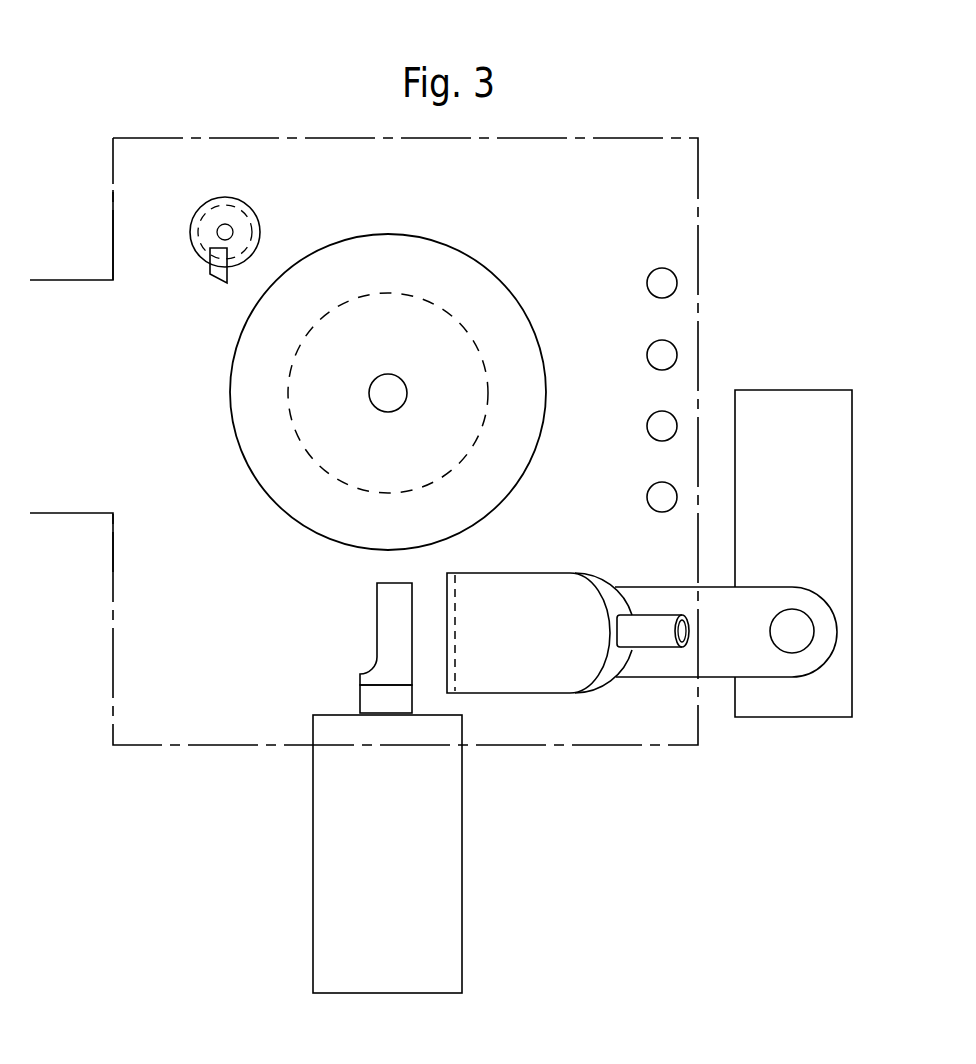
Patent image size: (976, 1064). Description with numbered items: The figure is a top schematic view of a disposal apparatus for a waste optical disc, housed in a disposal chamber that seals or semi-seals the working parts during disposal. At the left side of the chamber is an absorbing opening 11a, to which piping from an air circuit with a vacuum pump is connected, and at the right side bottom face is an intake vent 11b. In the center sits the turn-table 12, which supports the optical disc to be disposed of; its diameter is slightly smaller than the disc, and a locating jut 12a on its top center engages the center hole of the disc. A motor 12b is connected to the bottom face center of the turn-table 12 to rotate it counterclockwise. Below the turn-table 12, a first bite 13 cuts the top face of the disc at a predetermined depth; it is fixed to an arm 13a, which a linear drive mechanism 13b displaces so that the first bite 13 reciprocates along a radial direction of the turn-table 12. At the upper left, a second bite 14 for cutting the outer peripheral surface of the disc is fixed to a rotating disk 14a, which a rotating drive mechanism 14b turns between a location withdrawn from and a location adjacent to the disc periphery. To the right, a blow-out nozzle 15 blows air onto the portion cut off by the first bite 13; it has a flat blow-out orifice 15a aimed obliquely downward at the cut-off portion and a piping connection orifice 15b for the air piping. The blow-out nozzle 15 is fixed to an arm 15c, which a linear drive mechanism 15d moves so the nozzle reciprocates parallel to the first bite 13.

The absorbing opening 11a is at (58, 280).
The intake vent 11b is at (662, 268).
The turn-table 12 is at (525, 343).
The locating jut 12a is at (390, 388).
The motor 12b is at (478, 399).
The first bite 13 is at (385, 615).
The arm 13a is at (370, 698).
The linear drive mechanism 13b is at (325, 858).
The second bite 14 is at (213, 280).
The rotating disk 14a is at (259, 216).
The rotating drive mechanism 14b is at (196, 209).
The blow-out nozzle 15 is at (542, 587).
The blow-out orifice 15a is at (456, 645).
The piping connection orifice 15b is at (648, 640).
The arm 15c is at (750, 670).
The linear drive mechanism 15d is at (793, 400).